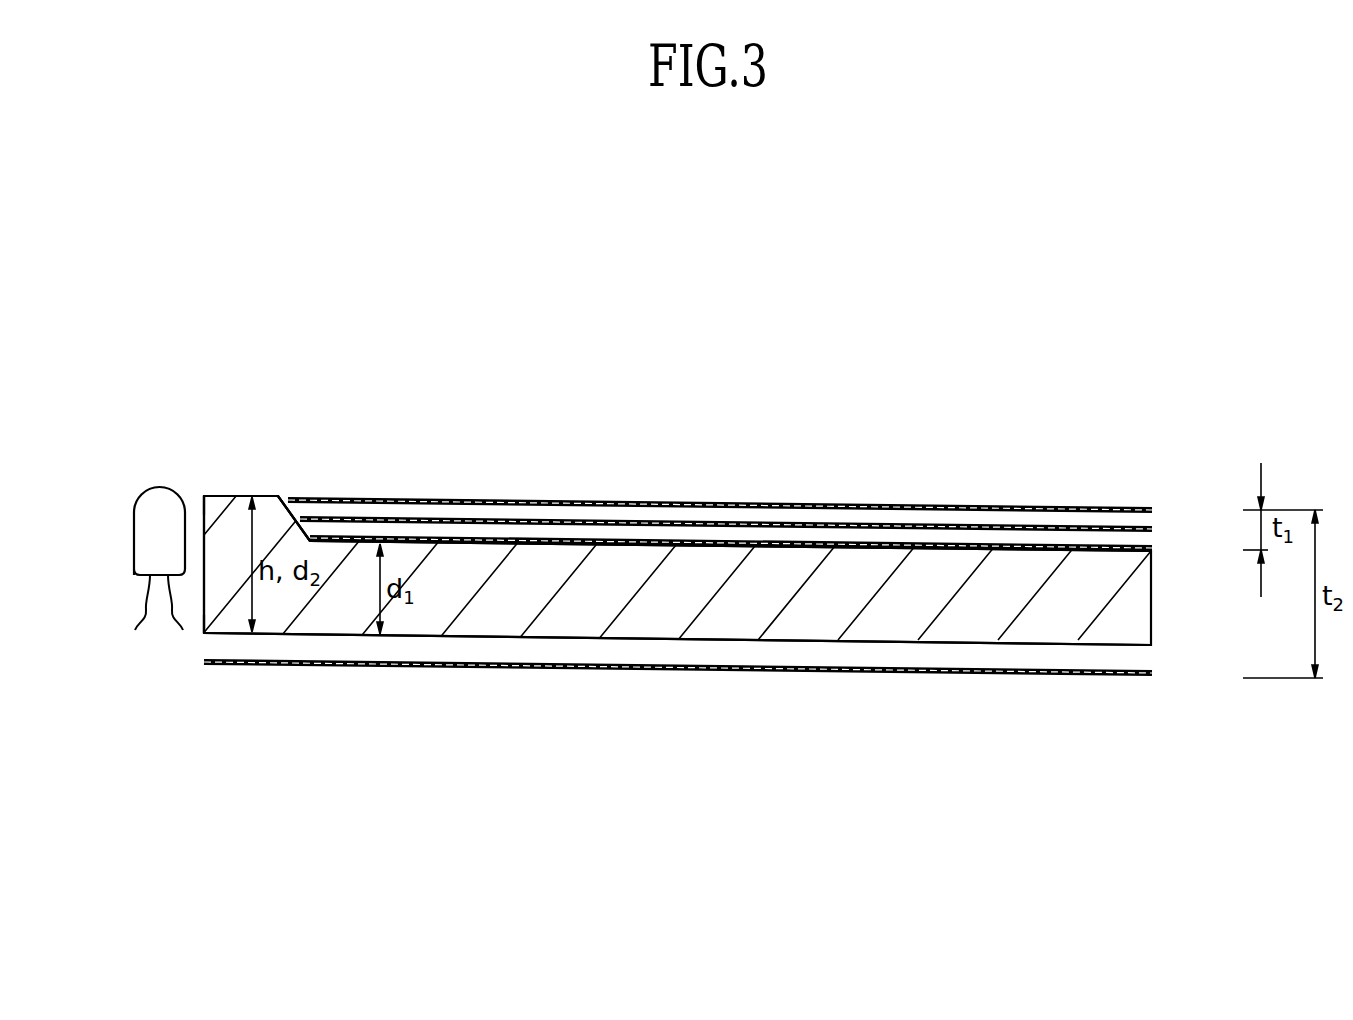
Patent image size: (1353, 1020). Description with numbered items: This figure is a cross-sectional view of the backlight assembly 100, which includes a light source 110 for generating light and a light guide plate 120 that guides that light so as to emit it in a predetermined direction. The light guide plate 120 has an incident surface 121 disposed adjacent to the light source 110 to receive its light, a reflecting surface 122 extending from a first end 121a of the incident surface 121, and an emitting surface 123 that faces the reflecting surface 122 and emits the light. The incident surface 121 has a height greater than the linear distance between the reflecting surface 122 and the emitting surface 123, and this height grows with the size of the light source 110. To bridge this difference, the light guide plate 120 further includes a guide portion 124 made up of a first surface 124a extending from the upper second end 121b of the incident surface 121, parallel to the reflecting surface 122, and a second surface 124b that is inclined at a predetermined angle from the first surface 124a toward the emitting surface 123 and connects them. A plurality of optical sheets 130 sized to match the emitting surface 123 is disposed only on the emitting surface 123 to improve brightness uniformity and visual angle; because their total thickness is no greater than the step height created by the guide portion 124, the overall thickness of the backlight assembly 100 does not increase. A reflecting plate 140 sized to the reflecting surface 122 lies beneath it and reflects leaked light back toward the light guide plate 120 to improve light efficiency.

The backlight assembly 100 is at (722, 350).
The light source 110 is at (140, 543).
The light guide plate 120 is at (1148, 597).
The incident surface 121 is at (204, 612).
The first end of the incident surface 121a is at (206, 636).
The second end of the incident surface 121b is at (204, 493).
The reflecting surface 122 is at (588, 638).
The emitting surface 123 is at (750, 544).
The guide portion 124 is at (313, 392).
The first surface 124a is at (218, 495).
The second surface 124b is at (288, 497).
The optical sheets 130 is at (1157, 509).
The reflecting plate 140 is at (1148, 673).